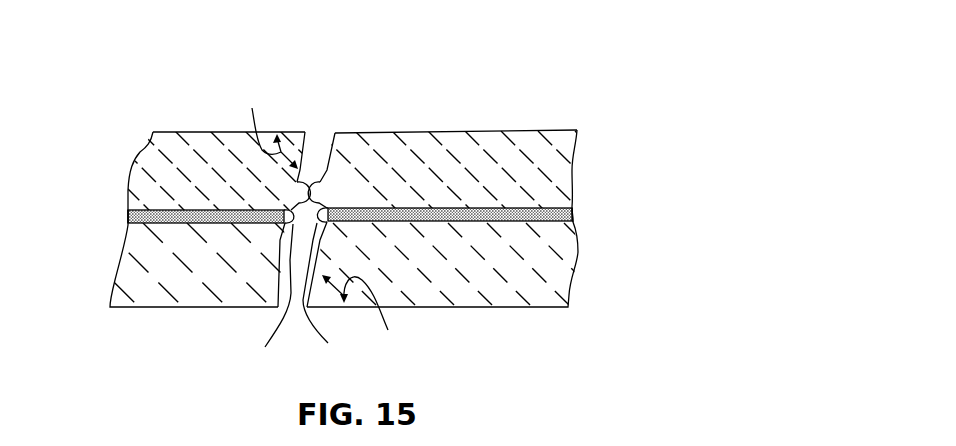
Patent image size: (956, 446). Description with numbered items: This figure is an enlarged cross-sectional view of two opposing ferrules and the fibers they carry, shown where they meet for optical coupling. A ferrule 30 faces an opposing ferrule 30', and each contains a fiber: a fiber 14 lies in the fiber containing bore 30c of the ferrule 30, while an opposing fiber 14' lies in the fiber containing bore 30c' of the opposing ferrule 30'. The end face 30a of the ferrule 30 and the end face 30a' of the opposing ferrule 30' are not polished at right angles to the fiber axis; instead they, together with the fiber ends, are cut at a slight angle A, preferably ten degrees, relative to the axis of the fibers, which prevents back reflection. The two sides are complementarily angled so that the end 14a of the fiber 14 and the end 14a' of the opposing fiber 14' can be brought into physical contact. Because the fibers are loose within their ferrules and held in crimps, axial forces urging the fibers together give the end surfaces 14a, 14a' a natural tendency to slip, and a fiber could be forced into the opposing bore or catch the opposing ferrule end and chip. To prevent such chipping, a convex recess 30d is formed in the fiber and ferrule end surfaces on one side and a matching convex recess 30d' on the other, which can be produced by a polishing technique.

The ferrule 30 is at (217, 203).
The opposing ferrule 30' is at (484, 200).
The end face of ferrule 30a is at (306, 131).
The end face of opposing ferrule 30a' is at (364, 129).
The fiber containing bore 30c is at (173, 193).
The fiber containing bore of opposing ferrule 30c' is at (485, 188).
The convex recess 30d is at (272, 187).
The convex recess of opposing ferrule 30d' is at (354, 185).
The fiber 14 is at (169, 241).
The opposing fiber 14' is at (482, 245).
The end of fiber 14a is at (262, 300).
The end of opposing fiber 14a' is at (333, 299).
The angle A is at (323, 217).